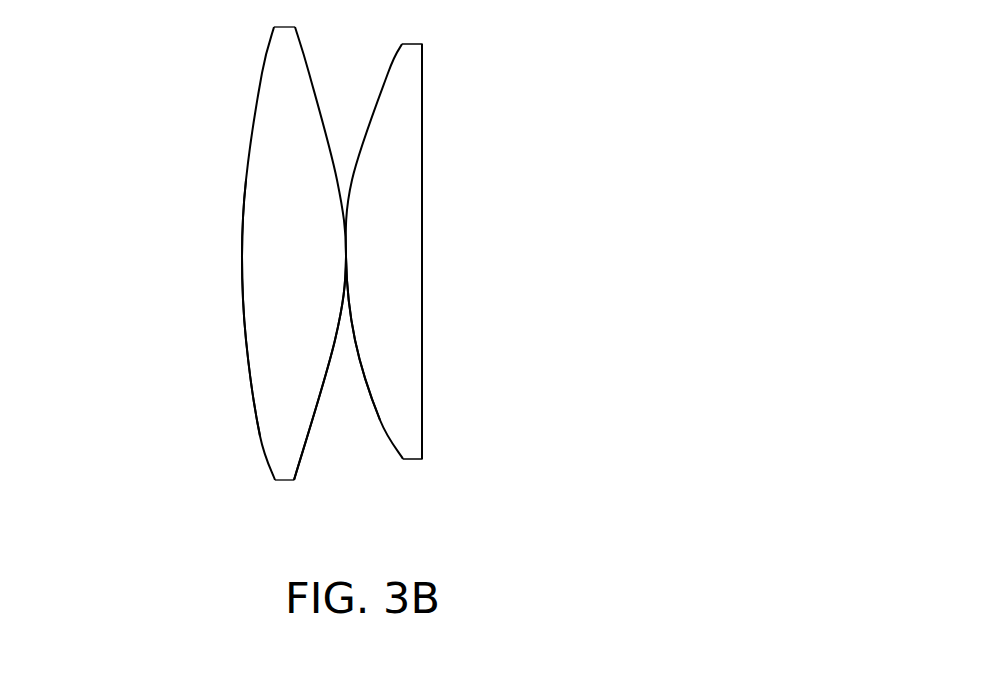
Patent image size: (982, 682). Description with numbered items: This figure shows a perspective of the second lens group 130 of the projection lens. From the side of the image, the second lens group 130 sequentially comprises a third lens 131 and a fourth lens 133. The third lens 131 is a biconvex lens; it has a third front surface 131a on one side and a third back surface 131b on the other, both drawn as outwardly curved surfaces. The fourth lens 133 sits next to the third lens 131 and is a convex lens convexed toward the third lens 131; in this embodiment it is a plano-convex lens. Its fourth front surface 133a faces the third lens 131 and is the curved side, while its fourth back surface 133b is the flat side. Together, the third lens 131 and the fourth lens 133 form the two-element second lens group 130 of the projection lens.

The second lens group 130 is at (652, 570).
The third lens 131 is at (268, 73).
The third front surface 131a is at (260, 436).
The third back surface 131b is at (310, 470).
The fourth lens 133 is at (414, 72).
The fourth front surface 133a is at (379, 420).
The fourth back surface 133b is at (424, 436).